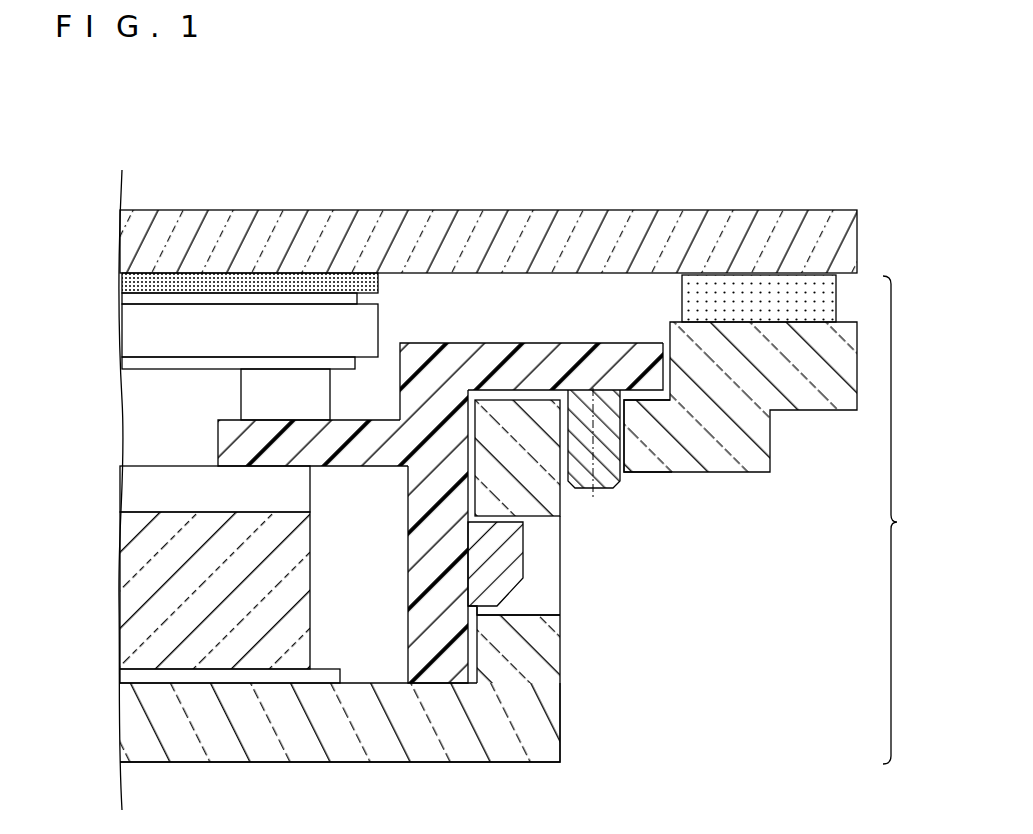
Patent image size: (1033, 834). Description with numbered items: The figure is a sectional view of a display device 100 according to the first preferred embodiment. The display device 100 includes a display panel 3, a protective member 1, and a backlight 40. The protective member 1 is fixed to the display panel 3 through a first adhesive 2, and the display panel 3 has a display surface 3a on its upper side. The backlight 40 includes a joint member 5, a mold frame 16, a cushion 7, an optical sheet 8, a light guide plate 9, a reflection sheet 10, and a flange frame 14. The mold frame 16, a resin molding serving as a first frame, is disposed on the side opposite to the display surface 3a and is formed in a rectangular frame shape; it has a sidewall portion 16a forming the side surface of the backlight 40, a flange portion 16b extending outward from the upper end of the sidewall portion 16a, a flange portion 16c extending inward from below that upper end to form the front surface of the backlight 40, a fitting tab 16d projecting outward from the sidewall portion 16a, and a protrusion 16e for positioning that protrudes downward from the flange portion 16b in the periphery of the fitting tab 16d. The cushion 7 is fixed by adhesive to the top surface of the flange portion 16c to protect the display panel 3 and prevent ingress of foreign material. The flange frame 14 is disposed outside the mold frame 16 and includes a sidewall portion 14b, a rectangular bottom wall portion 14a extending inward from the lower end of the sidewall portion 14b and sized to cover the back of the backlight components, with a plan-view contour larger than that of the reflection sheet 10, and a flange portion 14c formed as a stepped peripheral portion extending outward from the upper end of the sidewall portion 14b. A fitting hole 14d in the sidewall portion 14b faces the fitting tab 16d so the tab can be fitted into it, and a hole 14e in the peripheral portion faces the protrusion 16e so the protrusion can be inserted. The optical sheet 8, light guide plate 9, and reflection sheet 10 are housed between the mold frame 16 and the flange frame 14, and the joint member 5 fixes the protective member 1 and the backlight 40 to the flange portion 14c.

The display device 100 is at (100, 116).
The protective member 1 is at (850, 242).
The first adhesive 2 is at (122, 285).
The display panel 3 is at (113, 293).
The display surface 3a is at (258, 300).
The joint member 5 is at (834, 299).
The cushion 7 is at (255, 405).
The optical sheet 8 is at (133, 494).
The light guide plate 9 is at (133, 612).
The reflection sheet 10 is at (135, 680).
The flange frame 14 is at (560, 738).
The bottom wall portion 14a is at (135, 716).
The sidewall portion 14b is at (545, 688).
The flange portion 14c is at (834, 393).
The fitting hole 14d is at (535, 608).
The hole 14e is at (626, 475).
The mold frame 16 is at (463, 344).
The sidewall portion 16a is at (414, 602).
The flange portion 16b is at (573, 360).
The flange portion 16c is at (240, 446).
The fitting tab 16d is at (515, 563).
The protrusion 16e is at (596, 490).
The backlight 40 is at (907, 520).